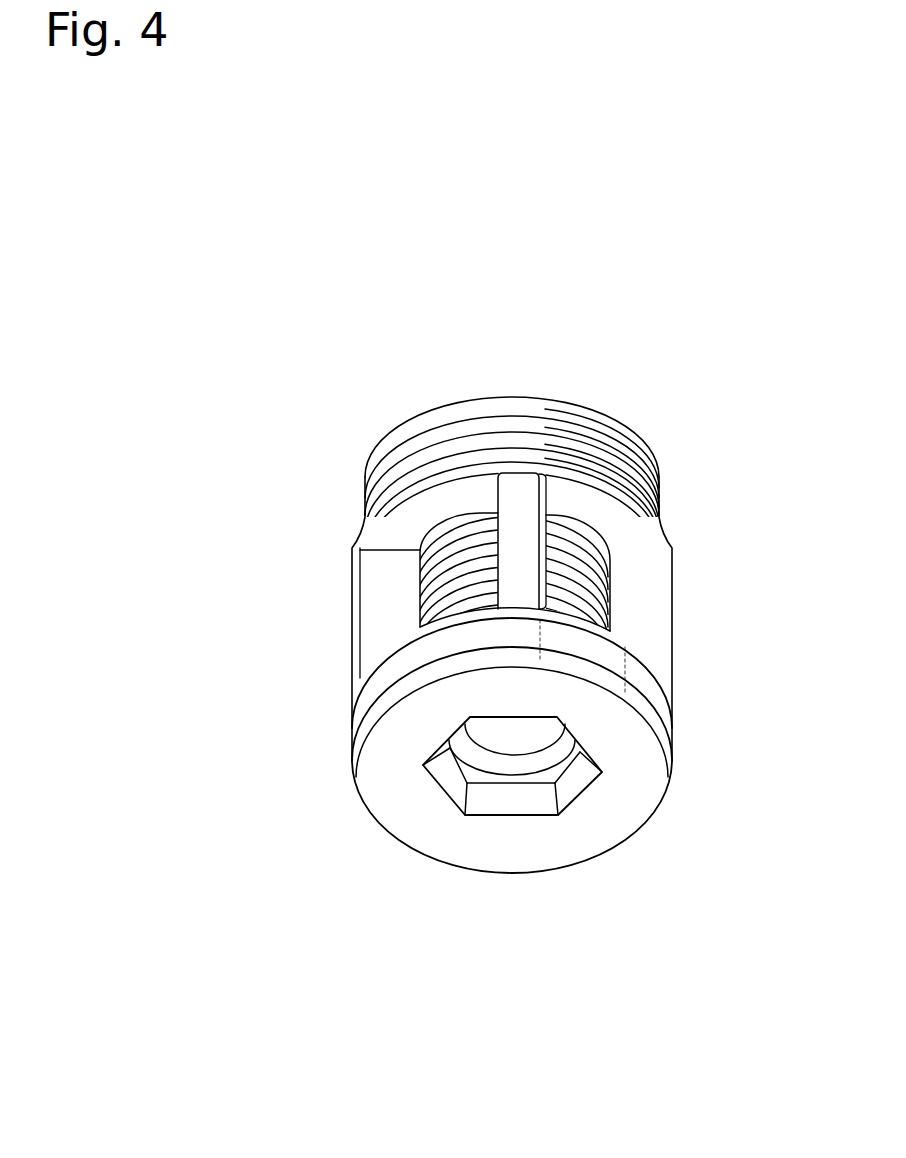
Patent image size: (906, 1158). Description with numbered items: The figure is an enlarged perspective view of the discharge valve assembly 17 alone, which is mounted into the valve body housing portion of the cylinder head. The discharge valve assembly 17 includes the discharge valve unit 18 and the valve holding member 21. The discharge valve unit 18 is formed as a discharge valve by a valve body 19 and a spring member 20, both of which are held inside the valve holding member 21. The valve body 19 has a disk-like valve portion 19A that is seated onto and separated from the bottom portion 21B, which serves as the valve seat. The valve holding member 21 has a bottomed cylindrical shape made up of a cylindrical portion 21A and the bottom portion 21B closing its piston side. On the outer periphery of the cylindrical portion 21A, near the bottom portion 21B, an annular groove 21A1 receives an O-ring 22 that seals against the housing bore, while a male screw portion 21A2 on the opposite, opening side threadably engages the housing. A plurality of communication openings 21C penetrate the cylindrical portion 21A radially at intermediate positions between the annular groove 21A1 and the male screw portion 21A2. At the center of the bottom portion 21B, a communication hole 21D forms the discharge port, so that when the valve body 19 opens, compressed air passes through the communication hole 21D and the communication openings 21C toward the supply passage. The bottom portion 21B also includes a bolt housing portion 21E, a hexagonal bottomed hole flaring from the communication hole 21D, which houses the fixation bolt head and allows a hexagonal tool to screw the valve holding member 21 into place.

The discharge valve assembly 17 is at (499, 380).
The discharge valve unit 18 is at (622, 590).
The valve body 19 is at (517, 732).
The valve portion 19A is at (512, 749).
The spring member 20 is at (435, 607).
The valve holding member 21 is at (340, 554).
The cylindrical portion 21A is at (522, 493).
The annular groove 21A1 is at (388, 682).
The male screw portion 21A2 is at (432, 440).
The bottom portion 21B is at (400, 800).
The communication openings 21C is at (383, 590).
The communication hole 21D is at (483, 762).
The bolt housing portion 21E is at (577, 780).
The O-ring 22 is at (645, 680).